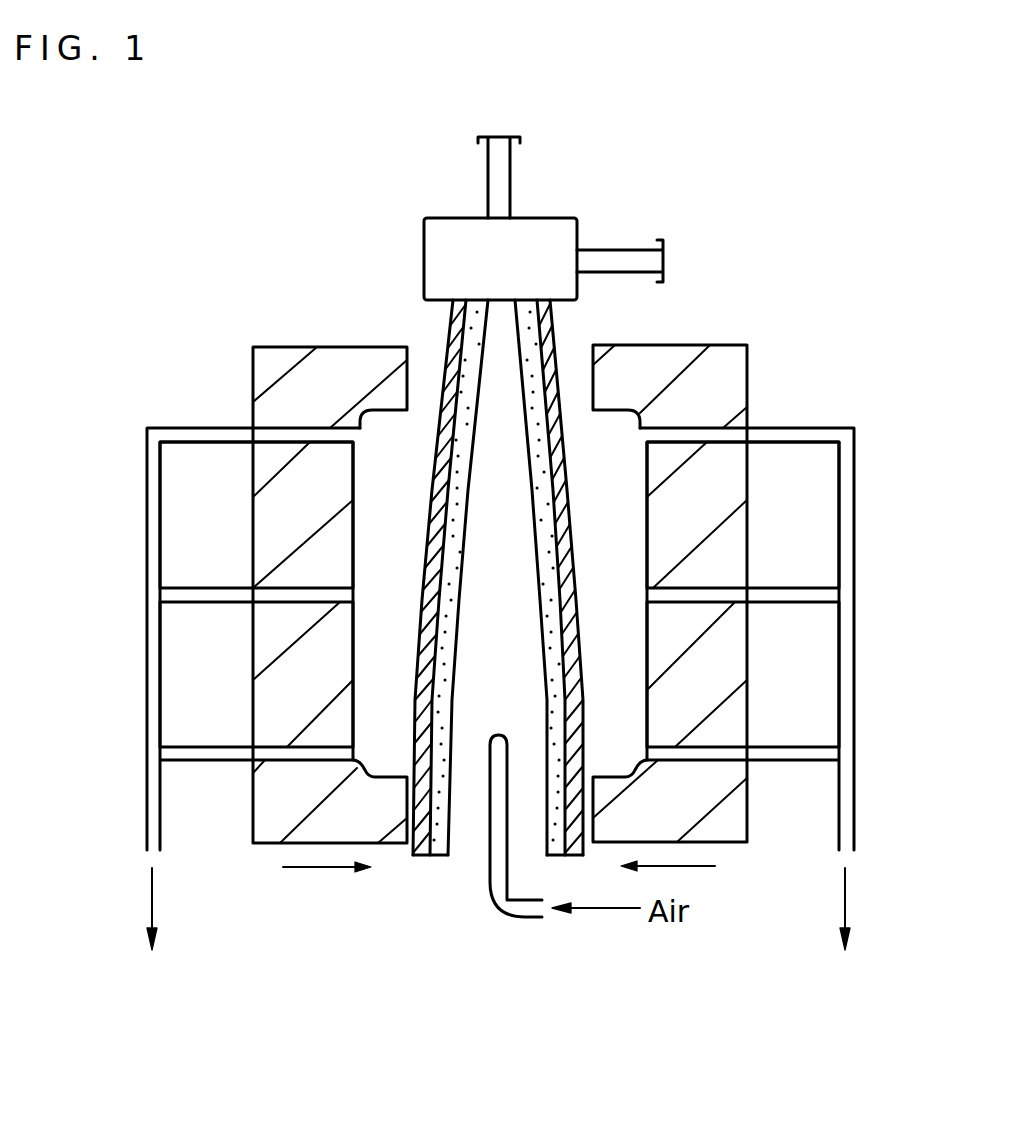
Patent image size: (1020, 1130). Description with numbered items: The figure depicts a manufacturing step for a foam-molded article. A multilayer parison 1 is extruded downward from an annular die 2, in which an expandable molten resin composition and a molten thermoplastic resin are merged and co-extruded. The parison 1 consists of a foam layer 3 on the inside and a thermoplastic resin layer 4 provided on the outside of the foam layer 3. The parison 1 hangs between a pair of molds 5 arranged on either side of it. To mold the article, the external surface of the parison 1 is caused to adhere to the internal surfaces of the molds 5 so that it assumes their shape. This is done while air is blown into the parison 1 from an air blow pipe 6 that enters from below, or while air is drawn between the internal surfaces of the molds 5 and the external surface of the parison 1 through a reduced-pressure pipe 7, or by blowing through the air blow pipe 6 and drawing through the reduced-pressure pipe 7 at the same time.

The parison 1 is at (424, 565).
The annular die 2 is at (540, 222).
The foam layer 3 is at (467, 330).
The thermoplastic resin layer 4 is at (453, 302).
The molds 5 is at (253, 385).
The air blow pipe 6 is at (488, 888).
The reduced-pressure pipe 7 is at (147, 510).